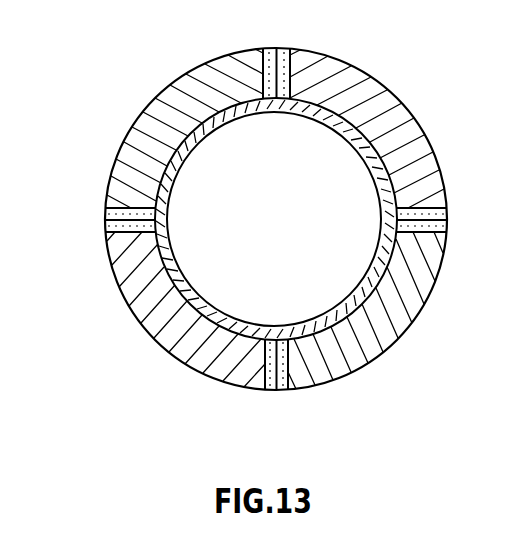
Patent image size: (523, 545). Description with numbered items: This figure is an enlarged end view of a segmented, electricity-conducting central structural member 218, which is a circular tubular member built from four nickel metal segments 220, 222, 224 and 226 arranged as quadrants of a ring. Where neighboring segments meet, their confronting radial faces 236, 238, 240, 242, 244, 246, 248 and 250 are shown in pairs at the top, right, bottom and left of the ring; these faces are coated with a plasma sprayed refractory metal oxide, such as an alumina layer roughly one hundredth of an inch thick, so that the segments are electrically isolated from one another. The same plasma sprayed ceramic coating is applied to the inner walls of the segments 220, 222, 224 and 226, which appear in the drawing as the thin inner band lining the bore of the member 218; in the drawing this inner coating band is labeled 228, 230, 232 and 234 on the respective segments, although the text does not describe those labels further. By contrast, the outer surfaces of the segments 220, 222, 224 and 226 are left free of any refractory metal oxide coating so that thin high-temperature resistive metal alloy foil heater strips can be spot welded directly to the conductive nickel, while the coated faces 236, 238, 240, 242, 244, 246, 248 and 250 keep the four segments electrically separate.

The central structural member 218 is at (123, 348).
The nickel metal segment 220 is at (368, 100).
The nickel metal segment 222 is at (385, 335).
The nickel metal segment 224 is at (182, 347).
The nickel metal segment 226 is at (170, 117).
The inner liner portion 228 is at (330, 117).
The inner liner portion 230 is at (342, 320).
The inner liner portion 232 is at (187, 283).
The inner liner portion 234 is at (197, 147).
The confronting radial face 236 is at (265, 47).
The confronting radial face 238 is at (288, 47).
The confronting radial face 240 is at (448, 213).
The confronting radial face 242 is at (448, 231).
The confronting radial face 244 is at (286, 394).
The confronting radial face 246 is at (267, 394).
The confronting radial face 248 is at (104, 231).
The confronting radial face 250 is at (104, 212).